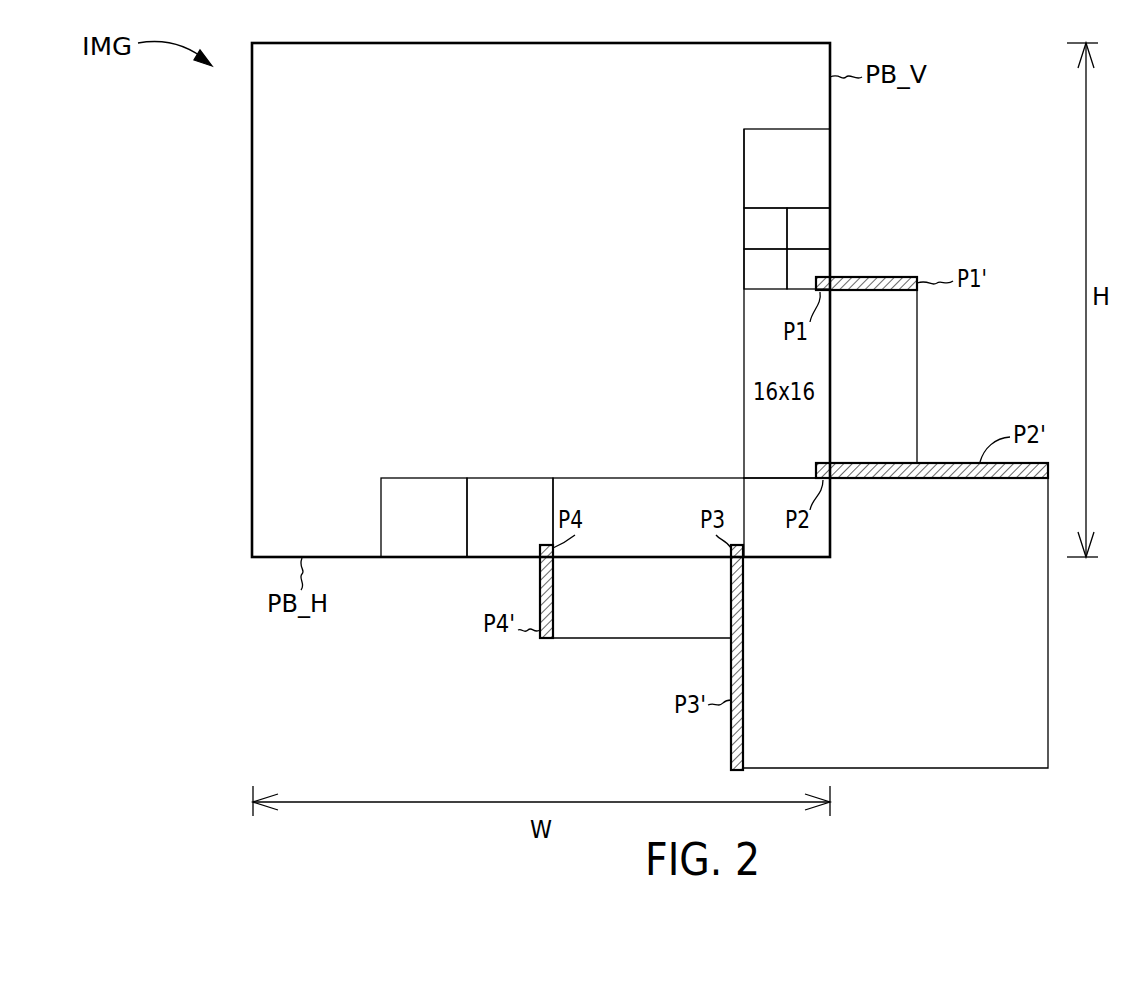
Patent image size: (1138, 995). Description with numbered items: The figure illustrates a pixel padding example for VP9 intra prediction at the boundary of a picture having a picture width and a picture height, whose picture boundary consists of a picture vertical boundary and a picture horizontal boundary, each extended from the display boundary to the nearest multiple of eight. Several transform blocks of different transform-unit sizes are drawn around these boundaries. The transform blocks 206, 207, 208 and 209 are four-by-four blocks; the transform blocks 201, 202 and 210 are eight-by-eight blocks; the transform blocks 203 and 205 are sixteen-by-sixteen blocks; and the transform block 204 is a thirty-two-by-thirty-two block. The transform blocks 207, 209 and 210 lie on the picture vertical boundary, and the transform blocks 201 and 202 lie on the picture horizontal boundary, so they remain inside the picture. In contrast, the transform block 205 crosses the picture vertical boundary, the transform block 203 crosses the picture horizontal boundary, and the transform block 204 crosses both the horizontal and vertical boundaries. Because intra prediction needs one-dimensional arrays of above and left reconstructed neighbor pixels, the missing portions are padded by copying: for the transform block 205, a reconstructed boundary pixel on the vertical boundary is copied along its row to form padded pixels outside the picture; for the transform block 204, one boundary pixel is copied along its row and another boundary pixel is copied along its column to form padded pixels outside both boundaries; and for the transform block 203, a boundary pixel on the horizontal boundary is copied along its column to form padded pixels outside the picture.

The transform block 201 is at (427, 478).
The transform block 202 is at (507, 478).
The transform block 203 is at (632, 478).
The transform block 204 is at (1048, 653).
The transform block 205 is at (917, 355).
The transform block 206 is at (744, 225).
The transform block 207 is at (830, 222).
The transform block 208 is at (744, 270).
The transform block 209 is at (830, 265).
The transform block 210 is at (744, 162).